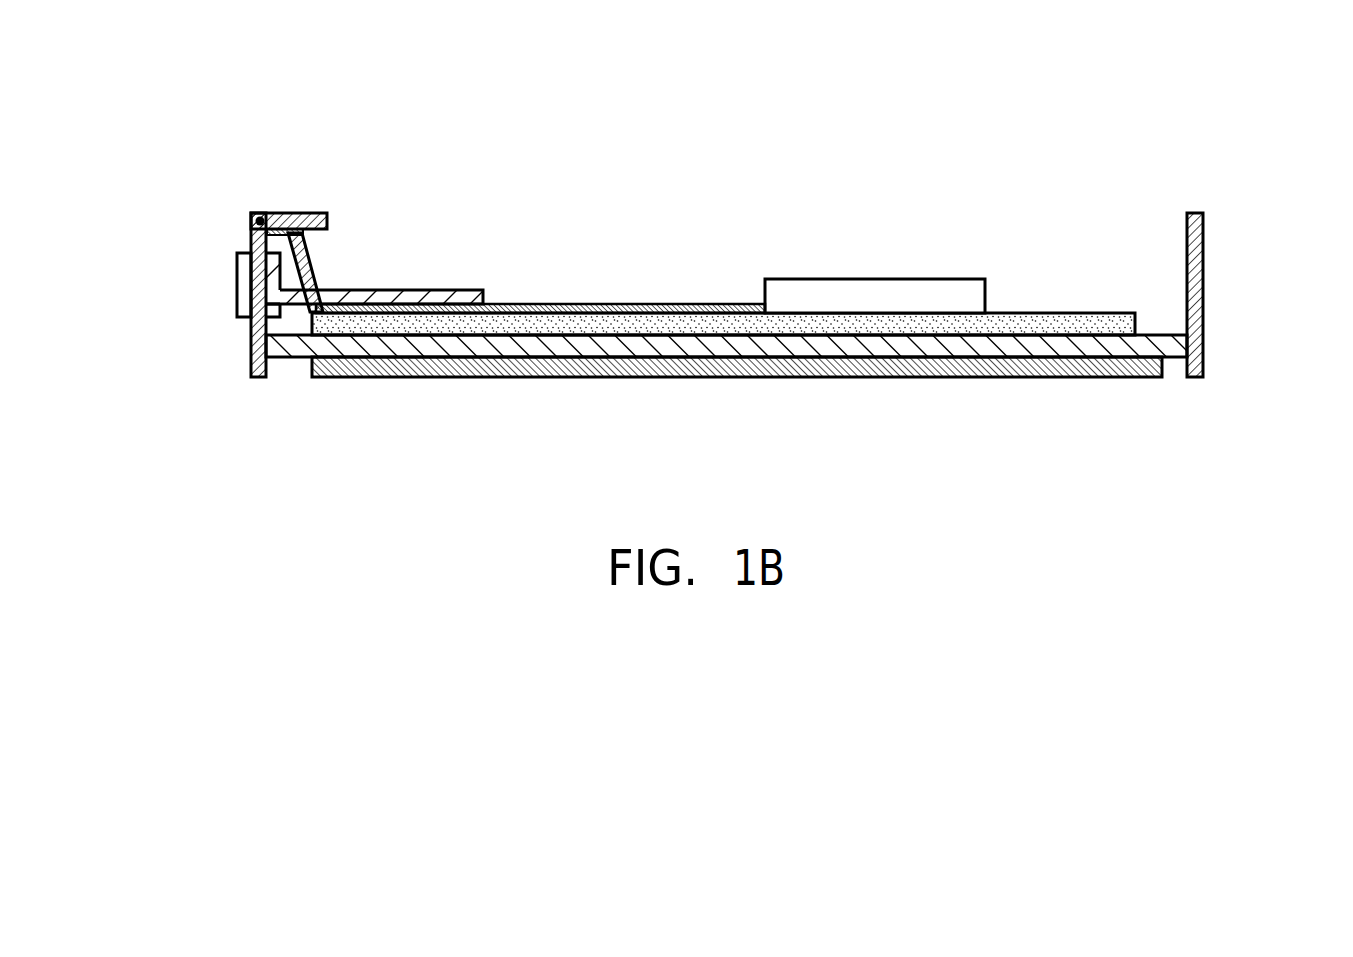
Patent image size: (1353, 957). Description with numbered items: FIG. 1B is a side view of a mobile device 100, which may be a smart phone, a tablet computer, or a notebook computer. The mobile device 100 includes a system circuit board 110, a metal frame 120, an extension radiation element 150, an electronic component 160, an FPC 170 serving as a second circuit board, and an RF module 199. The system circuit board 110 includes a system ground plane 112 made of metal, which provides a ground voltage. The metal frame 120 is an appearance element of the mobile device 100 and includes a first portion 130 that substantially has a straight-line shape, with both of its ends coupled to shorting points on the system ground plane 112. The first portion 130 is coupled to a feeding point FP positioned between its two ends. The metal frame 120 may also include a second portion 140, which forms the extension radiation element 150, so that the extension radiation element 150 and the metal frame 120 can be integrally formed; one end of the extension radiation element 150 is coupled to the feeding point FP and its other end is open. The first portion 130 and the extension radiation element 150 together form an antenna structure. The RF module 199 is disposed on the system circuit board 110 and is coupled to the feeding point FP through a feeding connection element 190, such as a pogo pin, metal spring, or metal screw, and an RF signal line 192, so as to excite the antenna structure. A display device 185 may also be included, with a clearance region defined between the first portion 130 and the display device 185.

The mobile device 100 is at (130, 62).
The system circuit board 110 is at (1056, 322).
The system ground plane 112 is at (1063, 357).
The metal frame 120 is at (1205, 283).
The first portion 130 is at (256, 349).
The second portion 140 is at (282, 181).
The extension radiation element 150 is at (290, 213).
The electronic component 160 is at (240, 285).
The FPC 170 is at (385, 297).
The display device 185 is at (962, 377).
The feeding connection element 190 is at (314, 258).
The RF signal line 192 is at (622, 304).
The RF module 199 is at (874, 291).
The feeding point FP is at (256, 220).